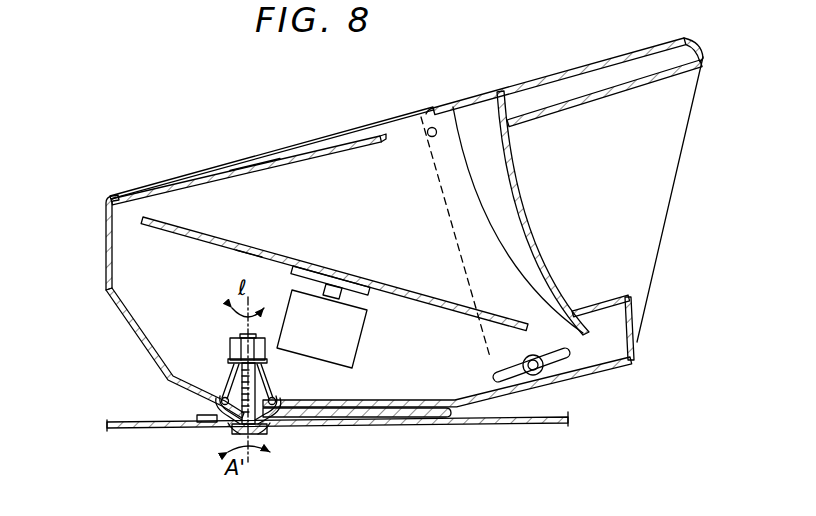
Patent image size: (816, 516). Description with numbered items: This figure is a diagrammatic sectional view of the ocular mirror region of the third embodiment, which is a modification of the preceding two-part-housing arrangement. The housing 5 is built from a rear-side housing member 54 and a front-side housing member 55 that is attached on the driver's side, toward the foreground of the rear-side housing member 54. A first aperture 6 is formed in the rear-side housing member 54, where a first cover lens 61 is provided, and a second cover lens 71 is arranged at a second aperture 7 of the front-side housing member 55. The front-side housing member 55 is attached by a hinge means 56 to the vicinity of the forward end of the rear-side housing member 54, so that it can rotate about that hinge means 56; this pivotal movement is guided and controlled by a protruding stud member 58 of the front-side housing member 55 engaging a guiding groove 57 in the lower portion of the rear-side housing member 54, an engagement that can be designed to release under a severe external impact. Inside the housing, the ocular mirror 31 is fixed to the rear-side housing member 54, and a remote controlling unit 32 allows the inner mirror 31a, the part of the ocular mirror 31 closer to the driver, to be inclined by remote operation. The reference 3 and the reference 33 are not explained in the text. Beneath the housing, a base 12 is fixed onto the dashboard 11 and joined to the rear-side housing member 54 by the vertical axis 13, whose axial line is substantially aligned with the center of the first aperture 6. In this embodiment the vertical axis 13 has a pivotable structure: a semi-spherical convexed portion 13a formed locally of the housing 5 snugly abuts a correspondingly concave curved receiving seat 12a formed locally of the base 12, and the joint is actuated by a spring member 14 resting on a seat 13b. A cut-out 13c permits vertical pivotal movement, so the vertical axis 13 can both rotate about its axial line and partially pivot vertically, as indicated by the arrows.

The top plate 3 is at (302, 140).
The housing 5 is at (108, 193).
The first aperture 6 is at (300, 160).
The second aperture 7 is at (658, 207).
The dashboard 11 is at (508, 428).
The base 12 is at (428, 420).
The receiving seat 12a is at (282, 430).
The vertical axis 13 is at (267, 375).
The convexed portion 13a is at (228, 425).
The seat 13b is at (214, 407).
The cut-out 13c is at (273, 434).
The spring member 14 is at (228, 375).
The ocular mirror 31 is at (259, 246).
The inner mirror 31a is at (353, 269).
The remote controlling unit 32 is at (340, 368).
The plate lower surface 33 is at (250, 262).
The rear-side housing member 54 is at (132, 322).
The front-side housing member 55 is at (580, 73).
The hinge means 56 is at (428, 129).
The guiding groove 57 is at (560, 362).
The stud member 58 is at (547, 383).
The first cover lens 61 is at (254, 150).
The second cover lens 71 is at (525, 212).